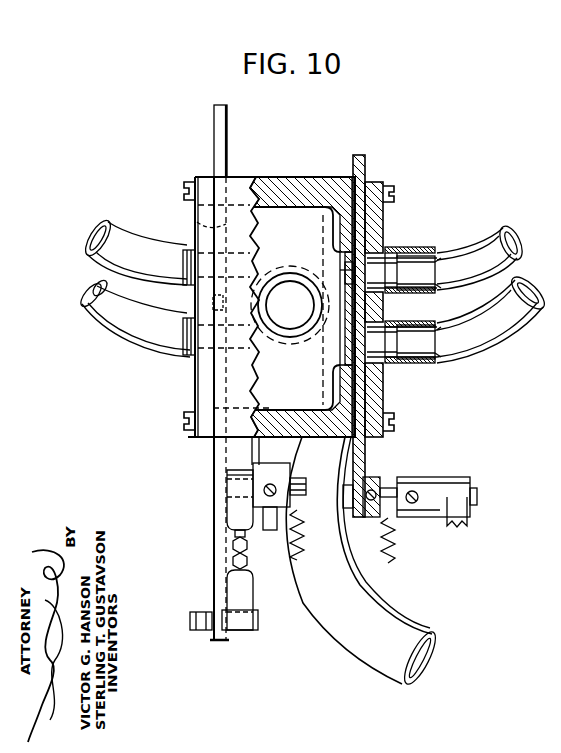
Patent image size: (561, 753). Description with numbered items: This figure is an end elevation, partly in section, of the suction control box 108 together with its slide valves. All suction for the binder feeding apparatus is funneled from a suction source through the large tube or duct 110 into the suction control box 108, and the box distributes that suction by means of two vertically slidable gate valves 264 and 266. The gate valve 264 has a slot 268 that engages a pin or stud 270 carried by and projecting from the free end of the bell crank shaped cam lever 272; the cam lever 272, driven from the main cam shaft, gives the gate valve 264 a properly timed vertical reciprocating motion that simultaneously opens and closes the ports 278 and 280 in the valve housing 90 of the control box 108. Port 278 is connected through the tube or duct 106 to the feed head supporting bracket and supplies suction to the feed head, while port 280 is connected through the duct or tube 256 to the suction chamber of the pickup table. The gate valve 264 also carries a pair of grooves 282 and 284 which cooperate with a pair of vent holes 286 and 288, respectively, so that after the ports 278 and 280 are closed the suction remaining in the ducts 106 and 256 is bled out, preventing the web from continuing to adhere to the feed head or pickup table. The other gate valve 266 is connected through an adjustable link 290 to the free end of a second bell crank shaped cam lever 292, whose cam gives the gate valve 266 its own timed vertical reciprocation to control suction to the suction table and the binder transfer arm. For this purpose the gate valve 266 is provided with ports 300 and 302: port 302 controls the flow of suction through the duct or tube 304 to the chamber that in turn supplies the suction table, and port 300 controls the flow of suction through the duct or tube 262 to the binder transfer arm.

The valve housing 90 is at (384, 400).
The tube or duct 106 is at (472, 358).
The suction control box 108 is at (284, 178).
The tube or duct 110 is at (423, 622).
The duct or tube 256 is at (515, 228).
The duct or tube 262 is at (137, 352).
The gate valve 264 is at (366, 164).
The gate valve 266 is at (226, 118).
The slot 268 is at (384, 475).
The pin or stud 270 is at (398, 478).
The cam lever 272 is at (466, 526).
The port 278 is at (383, 330).
The port 280 is at (360, 277).
The groove 282 is at (380, 310).
The groove 284 is at (386, 248).
The vent hole 286 is at (380, 382).
The vent hole 288 is at (386, 227).
The adjustable link 290 is at (246, 624).
The cam lever 292 is at (270, 520).
The port 300 is at (213, 300).
The port 302 is at (197, 222).
The duct or tube 304 is at (181, 236).